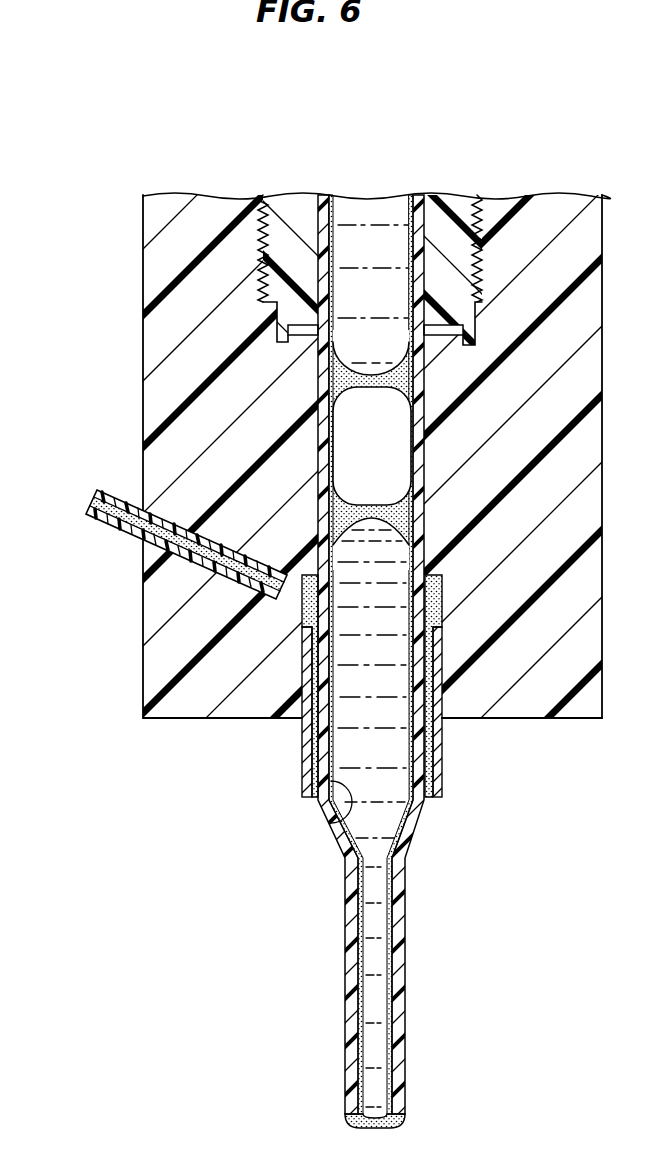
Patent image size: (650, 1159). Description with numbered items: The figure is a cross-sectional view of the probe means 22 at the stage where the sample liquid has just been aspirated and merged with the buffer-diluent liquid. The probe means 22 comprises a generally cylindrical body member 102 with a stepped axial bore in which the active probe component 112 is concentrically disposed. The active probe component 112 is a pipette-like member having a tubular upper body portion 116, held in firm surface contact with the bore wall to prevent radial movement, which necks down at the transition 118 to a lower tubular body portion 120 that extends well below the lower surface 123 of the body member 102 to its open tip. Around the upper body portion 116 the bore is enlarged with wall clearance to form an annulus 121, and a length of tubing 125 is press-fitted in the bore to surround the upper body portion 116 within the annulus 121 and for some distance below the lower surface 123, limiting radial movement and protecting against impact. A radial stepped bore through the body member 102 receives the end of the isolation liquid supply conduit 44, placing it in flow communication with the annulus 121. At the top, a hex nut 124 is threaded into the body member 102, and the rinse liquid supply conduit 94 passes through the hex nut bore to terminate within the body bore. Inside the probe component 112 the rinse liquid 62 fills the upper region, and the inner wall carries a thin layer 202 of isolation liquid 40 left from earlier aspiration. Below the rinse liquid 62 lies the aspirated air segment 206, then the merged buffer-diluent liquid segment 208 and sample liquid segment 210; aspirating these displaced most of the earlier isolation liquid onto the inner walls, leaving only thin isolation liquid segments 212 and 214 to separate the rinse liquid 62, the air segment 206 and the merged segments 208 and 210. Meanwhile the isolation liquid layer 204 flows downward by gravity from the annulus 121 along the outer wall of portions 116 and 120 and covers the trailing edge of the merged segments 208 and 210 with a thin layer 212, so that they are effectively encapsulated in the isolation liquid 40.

The probe means 22 is at (126, 408).
The isolation liquid 40 is at (98, 504).
The isolation liquid supply conduit 44 is at (127, 531).
The rinse liquid 62 is at (357, 343).
The rinse liquid supply conduit 94 is at (428, 218).
The body member 102 is at (145, 360).
The active probe component 112 is at (311, 531).
The upper body portion 116 is at (322, 498).
The necked-down transition 118 is at (405, 863).
The lower tubular body portion 120 is at (352, 1028).
The annulus 121 is at (427, 697).
The lower surface 123 is at (522, 719).
The hex nut 124 is at (290, 214).
The tubing 125 is at (443, 771).
The isolation liquid layer 202 is at (418, 468).
The isolation liquid layer 204 is at (407, 997).
The air segment 206 is at (387, 431).
The buffer-diluent liquid segment 208 is at (382, 552).
The sample liquid segment 210 is at (383, 815).
The isolation liquid segment 212 is at (373, 380).
The isolation liquid segment 214 is at (375, 509).